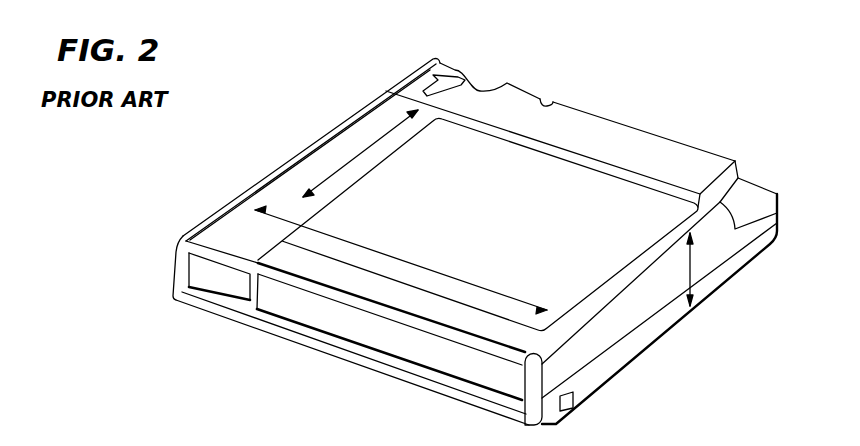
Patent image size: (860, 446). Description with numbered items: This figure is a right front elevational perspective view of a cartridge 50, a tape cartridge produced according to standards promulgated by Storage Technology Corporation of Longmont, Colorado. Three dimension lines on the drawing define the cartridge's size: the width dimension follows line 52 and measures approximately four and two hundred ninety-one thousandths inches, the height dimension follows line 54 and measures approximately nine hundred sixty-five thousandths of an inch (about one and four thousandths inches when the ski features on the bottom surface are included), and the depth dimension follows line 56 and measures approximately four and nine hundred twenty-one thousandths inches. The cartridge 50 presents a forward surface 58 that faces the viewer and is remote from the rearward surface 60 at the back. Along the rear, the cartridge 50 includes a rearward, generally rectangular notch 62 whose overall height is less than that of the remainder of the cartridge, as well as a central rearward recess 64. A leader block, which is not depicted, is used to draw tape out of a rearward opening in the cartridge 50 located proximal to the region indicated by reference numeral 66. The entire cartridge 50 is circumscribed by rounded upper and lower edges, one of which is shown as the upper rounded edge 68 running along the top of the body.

The 4400 ACS cartridge 50 is at (310, 167).
The width dimension line 52 is at (433, 270).
The height dimension line 54 is at (688, 263).
The depth dimension line 56 is at (374, 142).
The forward surface 58 is at (254, 292).
The rearward surface 60 is at (546, 99).
The rearward rectangular notch 62 is at (740, 193).
The central rearward recess 64 is at (600, 124).
The rearward opening region 66 is at (457, 72).
The upper rounded edge 68 is at (262, 185).